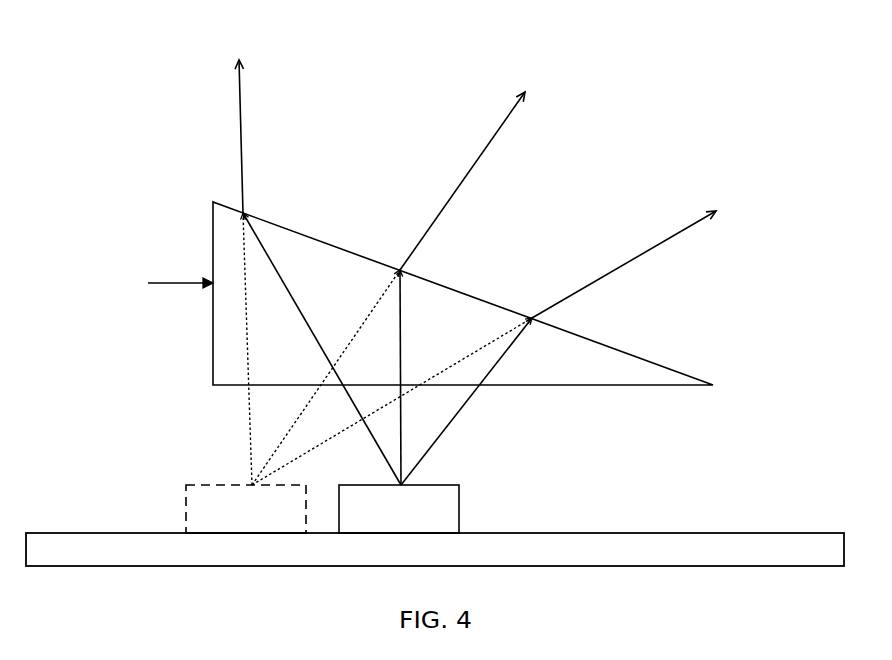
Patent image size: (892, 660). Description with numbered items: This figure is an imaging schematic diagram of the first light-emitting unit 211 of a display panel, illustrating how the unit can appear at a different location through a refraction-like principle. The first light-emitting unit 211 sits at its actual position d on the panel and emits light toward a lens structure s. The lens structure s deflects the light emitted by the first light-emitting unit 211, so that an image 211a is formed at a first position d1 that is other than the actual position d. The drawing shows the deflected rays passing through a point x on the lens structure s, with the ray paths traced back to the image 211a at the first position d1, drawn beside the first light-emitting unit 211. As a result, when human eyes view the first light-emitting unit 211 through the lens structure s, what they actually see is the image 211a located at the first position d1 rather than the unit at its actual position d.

The first light-emitting unit 211 is at (387, 373).
The image 211a is at (359, 373).
The lens structure s is at (169, 282).
The incidence point on inclined surface x is at (458, 181).
The actual position d is at (399, 549).
The first position d1 is at (246, 549).